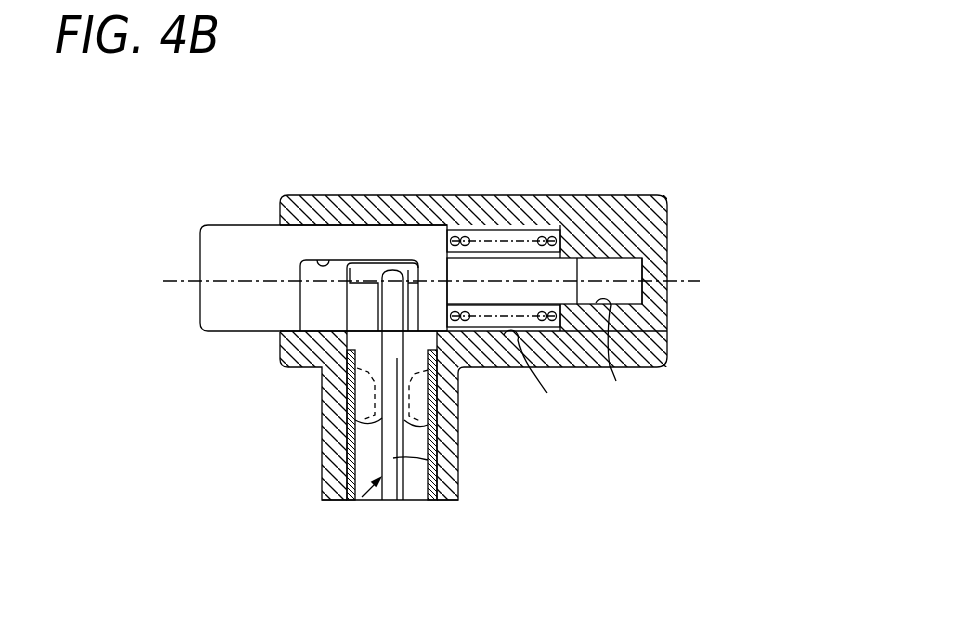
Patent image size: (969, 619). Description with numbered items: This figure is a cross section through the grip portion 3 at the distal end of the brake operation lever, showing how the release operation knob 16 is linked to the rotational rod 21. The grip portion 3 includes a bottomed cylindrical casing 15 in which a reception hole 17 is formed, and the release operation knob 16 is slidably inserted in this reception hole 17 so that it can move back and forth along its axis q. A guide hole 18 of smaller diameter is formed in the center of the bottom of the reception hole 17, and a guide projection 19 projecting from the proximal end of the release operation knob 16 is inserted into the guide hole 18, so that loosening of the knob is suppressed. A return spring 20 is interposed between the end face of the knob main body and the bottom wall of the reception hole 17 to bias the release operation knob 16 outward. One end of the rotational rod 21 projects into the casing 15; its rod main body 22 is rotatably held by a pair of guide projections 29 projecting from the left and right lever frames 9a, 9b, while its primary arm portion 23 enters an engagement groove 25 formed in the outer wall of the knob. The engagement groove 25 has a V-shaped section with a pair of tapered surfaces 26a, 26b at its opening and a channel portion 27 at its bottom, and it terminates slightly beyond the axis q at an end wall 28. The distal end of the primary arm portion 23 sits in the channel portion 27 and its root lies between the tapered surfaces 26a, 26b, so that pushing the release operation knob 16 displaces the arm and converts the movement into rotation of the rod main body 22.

The grip portion 3 is at (626, 187).
The axis of the release operation knob q is at (681, 272).
The lever frame 9a is at (336, 503).
The lever frame 9b is at (445, 503).
The casing 15 is at (655, 337).
The release operation knob 16 is at (213, 300).
The reception hole 17 is at (538, 382).
The guide hole 18 is at (615, 357).
The guide projection 19 is at (571, 272).
The return spring 20 is at (533, 240).
The rotational rod 21 is at (356, 503).
The rod main body 22 is at (440, 478).
The primary arm portion 23 is at (361, 268).
The engagement groove 25 is at (311, 310).
The tapered surface 26a is at (337, 337).
The tapered surface 26b is at (478, 367).
The channel portion 27 is at (355, 298).
The end wall 28 is at (335, 262).
The guide projection 29 is at (395, 433).